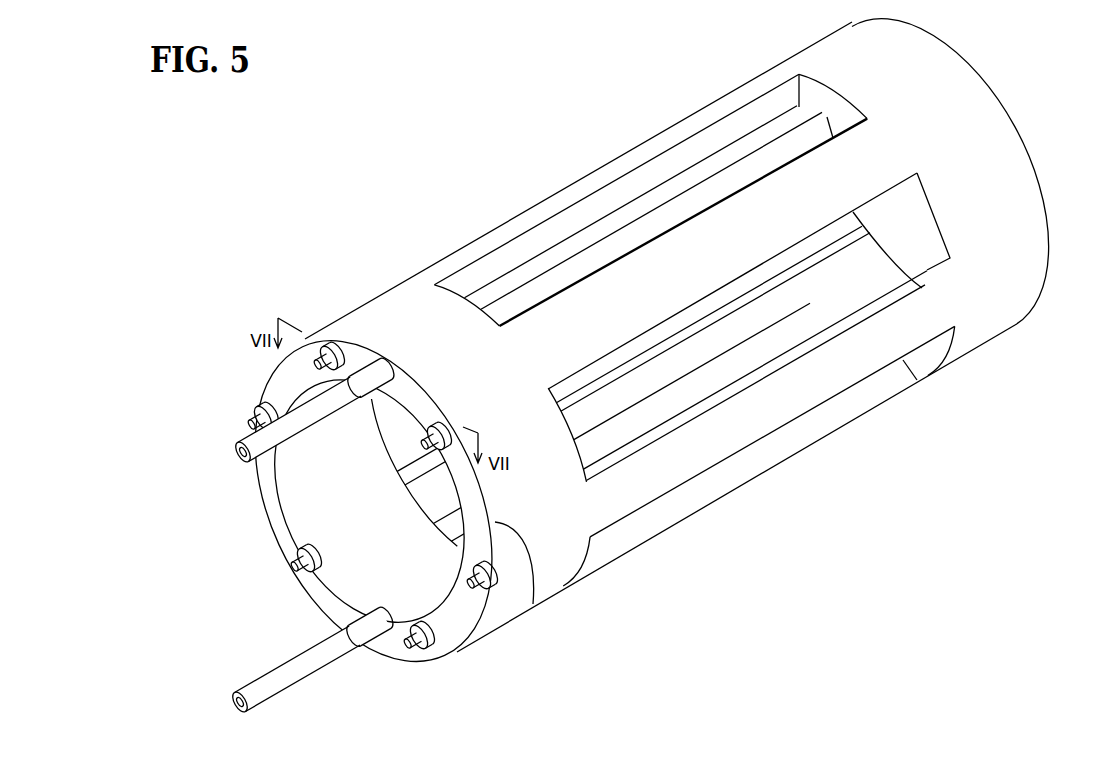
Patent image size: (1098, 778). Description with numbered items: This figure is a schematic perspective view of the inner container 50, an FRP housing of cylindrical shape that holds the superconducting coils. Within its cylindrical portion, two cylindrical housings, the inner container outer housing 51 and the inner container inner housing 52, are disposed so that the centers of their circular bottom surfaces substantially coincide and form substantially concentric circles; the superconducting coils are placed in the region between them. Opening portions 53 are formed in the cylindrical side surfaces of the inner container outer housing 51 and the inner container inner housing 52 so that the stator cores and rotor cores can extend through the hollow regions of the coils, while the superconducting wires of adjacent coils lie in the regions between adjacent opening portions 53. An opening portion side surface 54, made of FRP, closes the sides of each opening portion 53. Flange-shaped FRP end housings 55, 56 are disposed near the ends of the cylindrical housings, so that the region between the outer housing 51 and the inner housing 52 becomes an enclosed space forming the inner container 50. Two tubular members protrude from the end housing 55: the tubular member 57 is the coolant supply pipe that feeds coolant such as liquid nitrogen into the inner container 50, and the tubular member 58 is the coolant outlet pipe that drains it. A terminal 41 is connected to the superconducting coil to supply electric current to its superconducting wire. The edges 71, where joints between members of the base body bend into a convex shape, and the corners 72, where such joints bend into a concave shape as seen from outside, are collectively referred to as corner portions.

The inner container 50 is at (648, 358).
The inner container outer housing 51 is at (533, 604).
The inner container inner housing 52 is at (437, 607).
The opening portion 53 is at (838, 277).
The opening portion side surface 54 is at (897, 292).
The end housing 55 is at (430, 647).
The end housing 56 is at (1031, 168).
The tubular member 57 is at (322, 657).
The tubular member 58 is at (318, 403).
The edge 71 is at (824, 80).
The corner 72 is at (797, 93).
The terminal 41 is at (297, 552).